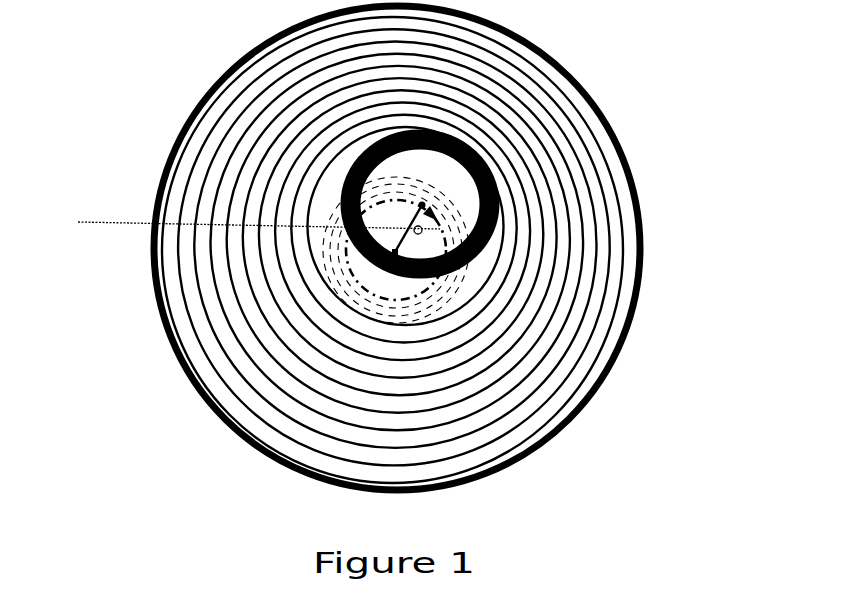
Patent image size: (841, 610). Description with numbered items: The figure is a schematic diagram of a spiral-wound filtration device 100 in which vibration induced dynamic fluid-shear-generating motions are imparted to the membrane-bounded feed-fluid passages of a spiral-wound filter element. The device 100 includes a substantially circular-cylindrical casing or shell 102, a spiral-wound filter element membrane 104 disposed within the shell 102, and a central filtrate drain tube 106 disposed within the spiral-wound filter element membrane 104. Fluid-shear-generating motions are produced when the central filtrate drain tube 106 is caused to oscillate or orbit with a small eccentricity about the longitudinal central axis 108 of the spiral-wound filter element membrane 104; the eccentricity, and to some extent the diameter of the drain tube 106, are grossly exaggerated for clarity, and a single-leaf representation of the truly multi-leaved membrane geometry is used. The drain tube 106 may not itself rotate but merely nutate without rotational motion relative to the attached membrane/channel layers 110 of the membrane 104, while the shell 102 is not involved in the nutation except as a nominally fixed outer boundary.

The SW filtration device 100 is at (133, 97).
The shell 102 is at (583, 82).
The spiral-wound filter element membrane 104 is at (568, 162).
The central filtrate drain tube 106 is at (490, 227).
The central axis 108 is at (445, 272).
The membrane/channel layers 110 is at (450, 322).